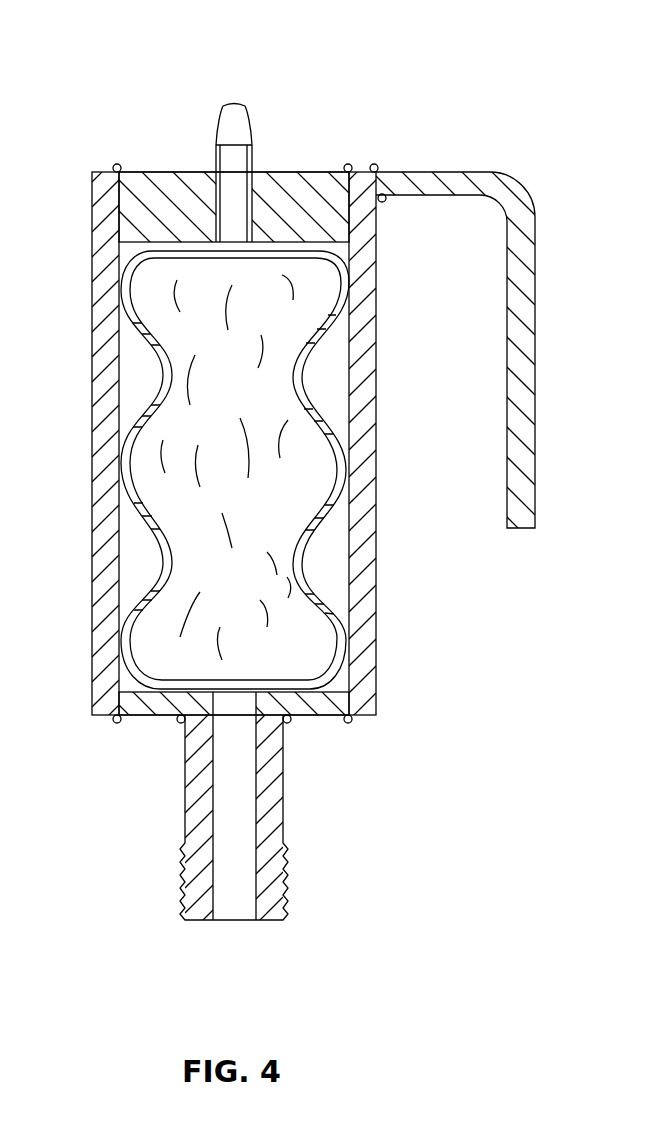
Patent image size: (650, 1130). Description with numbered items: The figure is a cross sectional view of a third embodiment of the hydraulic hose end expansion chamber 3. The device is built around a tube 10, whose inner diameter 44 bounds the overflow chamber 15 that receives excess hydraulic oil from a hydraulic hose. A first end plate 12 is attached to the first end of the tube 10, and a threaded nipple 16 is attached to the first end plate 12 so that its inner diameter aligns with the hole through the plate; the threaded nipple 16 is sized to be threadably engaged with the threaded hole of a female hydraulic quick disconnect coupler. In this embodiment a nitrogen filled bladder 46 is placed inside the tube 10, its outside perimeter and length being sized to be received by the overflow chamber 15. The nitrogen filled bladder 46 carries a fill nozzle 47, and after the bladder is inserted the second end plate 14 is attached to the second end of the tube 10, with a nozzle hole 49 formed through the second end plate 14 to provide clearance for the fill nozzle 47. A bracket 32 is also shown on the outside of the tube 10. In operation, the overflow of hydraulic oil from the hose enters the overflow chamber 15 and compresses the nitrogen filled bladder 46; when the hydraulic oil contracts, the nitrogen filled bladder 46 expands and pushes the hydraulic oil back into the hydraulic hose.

The hydraulic hose end expansion chamber 3 is at (488, 732).
The tube 10 is at (372, 538).
The first end plate 12 is at (150, 710).
The second end plate 14 is at (148, 172).
The overflow chamber 15 is at (140, 362).
The threaded nipple 16 is at (283, 778).
The mounting bracket 32 is at (518, 190).
The inner diameter 44 is at (327, 357).
The nitrogen filled bladder 46 is at (145, 520).
The fill nozzle 47 is at (234, 103).
The nozzle hole 49 is at (191, 172).